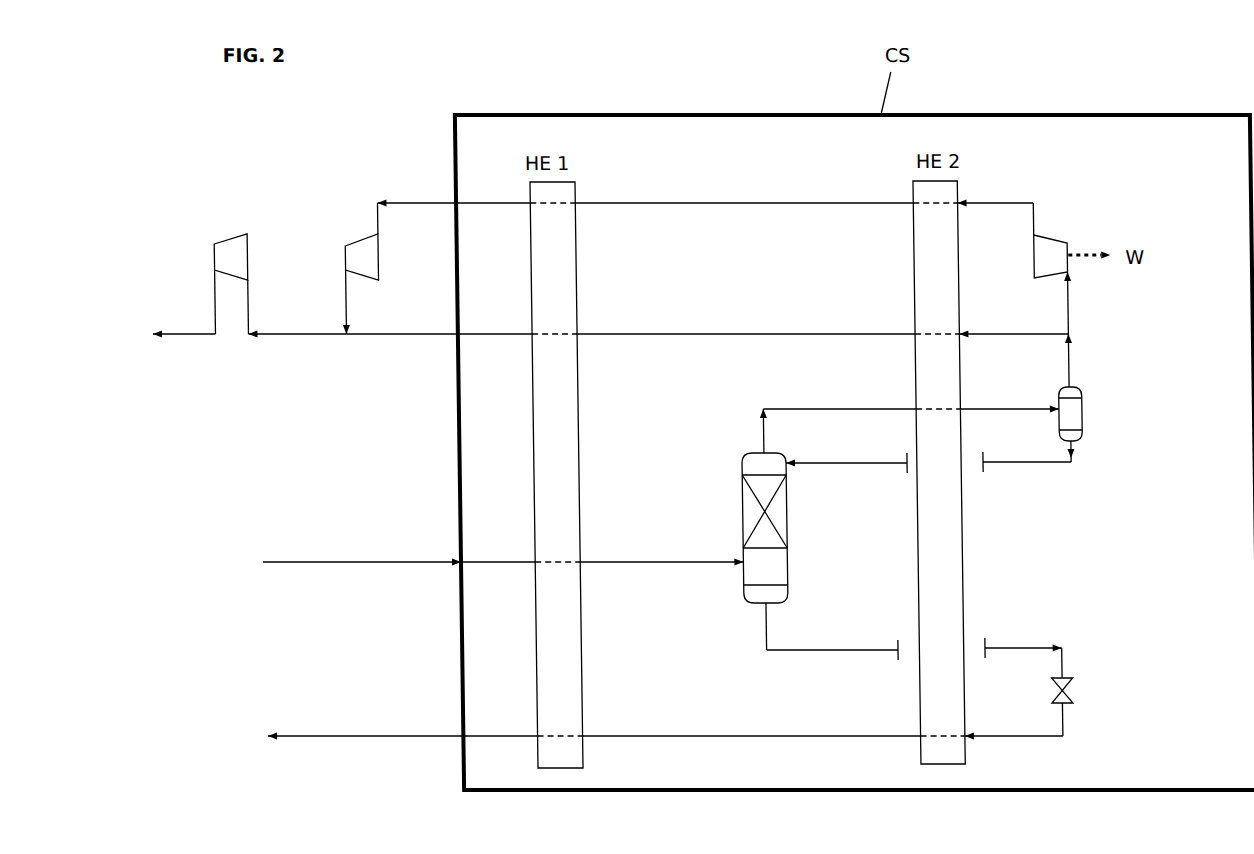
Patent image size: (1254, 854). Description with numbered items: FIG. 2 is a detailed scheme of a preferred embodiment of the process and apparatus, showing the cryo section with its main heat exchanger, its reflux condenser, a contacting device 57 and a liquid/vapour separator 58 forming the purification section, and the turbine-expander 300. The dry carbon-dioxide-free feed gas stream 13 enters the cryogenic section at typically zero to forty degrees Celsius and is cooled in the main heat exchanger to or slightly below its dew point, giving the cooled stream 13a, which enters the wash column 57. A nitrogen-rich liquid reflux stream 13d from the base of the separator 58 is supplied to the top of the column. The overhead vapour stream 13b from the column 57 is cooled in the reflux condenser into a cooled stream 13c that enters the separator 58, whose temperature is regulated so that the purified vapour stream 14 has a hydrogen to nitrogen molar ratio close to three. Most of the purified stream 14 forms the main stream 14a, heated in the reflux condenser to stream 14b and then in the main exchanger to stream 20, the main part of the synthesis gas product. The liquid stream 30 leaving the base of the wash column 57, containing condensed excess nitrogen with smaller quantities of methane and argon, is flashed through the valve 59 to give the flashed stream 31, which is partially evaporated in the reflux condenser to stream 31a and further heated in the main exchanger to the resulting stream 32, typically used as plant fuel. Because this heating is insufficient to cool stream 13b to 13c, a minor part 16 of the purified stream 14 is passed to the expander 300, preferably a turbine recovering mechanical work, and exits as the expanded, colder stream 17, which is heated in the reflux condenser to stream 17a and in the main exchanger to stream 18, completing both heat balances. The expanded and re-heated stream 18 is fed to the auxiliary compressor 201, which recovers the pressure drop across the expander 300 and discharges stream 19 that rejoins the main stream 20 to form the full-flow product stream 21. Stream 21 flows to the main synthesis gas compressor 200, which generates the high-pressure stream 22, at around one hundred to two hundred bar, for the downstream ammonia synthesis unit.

The main synthesis gas compressor 200 is at (236, 240).
The auxiliary compressor 201 is at (369, 243).
The turbine-expander 300 is at (1060, 243).
The contacting device 57 is at (751, 513).
The liquid/vapour separator 58 is at (1083, 410).
The valve 59 is at (1070, 687).
The feed gas stream 13 is at (362, 574).
The cooled stream 13a is at (602, 574).
The overhead vapour stream 13b is at (838, 431).
The cooled stream 13c is at (1009, 399).
The nitrogen-rich liquid reflux stream 13d is at (1029, 465).
The purified vapour stream 14 is at (1081, 360).
The main stream 14a is at (1013, 346).
The heated main stream 14b is at (746, 347).
The minor part of purified synthesis gas stream 16 is at (1079, 303).
The expanded stream 17 is at (996, 218).
The heated expanded stream 17a is at (744, 214).
The expanded and re-heated stream 18 is at (453, 217).
The auxiliary compressor outlet stream 19 is at (327, 302).
The main synthesis gas product stream 20 is at (439, 348).
The full-flow synthesis gas product stream 21 is at (297, 321).
The high-pressure stream 22 is at (184, 316).
The liquid stream 30 is at (832, 637).
The flashed stream 31 is at (1014, 697).
The partially evaporated stream 31a is at (752, 748).
The fuel gas stream 32 is at (403, 747).